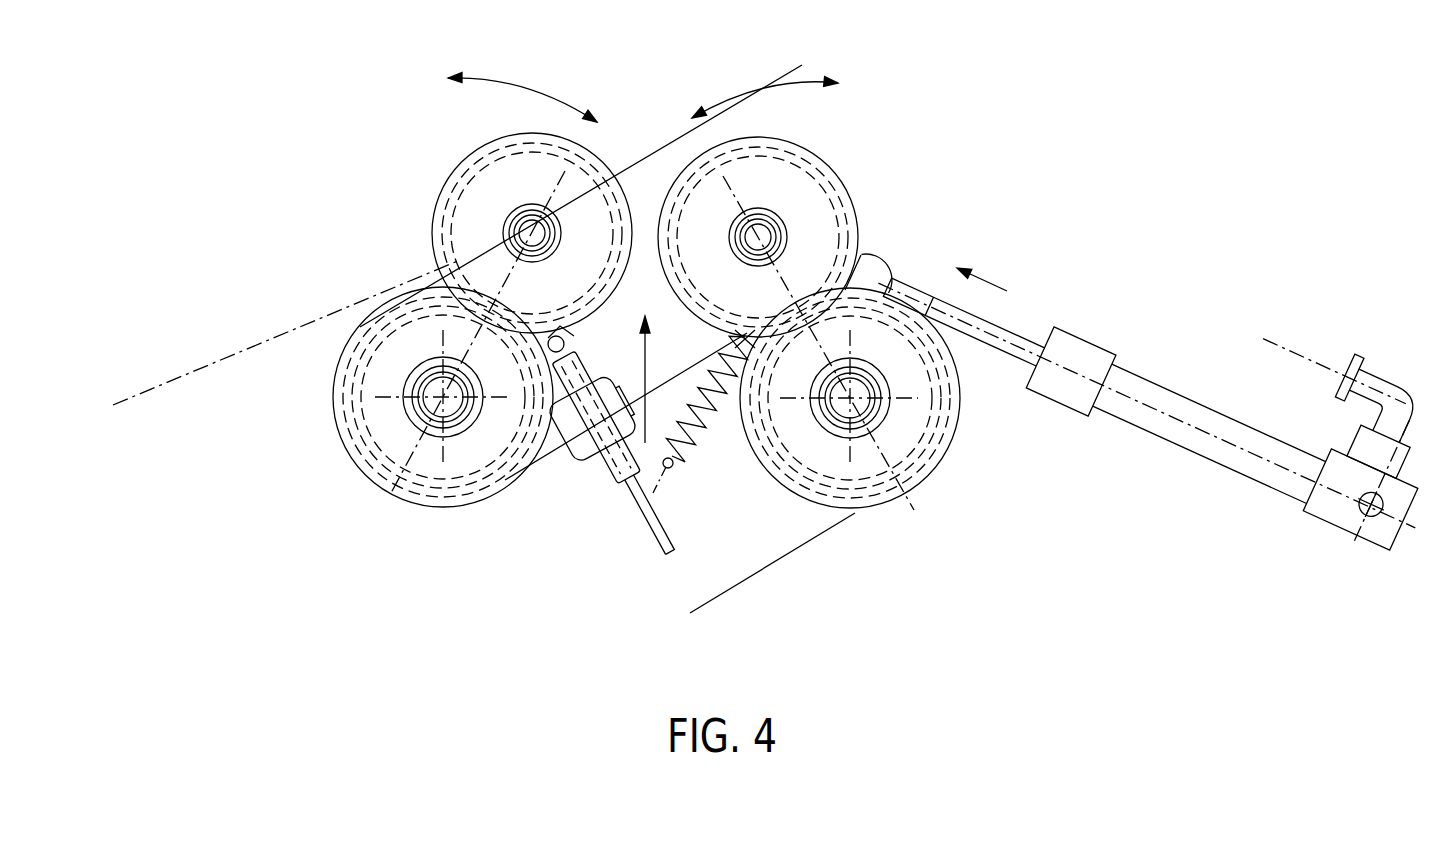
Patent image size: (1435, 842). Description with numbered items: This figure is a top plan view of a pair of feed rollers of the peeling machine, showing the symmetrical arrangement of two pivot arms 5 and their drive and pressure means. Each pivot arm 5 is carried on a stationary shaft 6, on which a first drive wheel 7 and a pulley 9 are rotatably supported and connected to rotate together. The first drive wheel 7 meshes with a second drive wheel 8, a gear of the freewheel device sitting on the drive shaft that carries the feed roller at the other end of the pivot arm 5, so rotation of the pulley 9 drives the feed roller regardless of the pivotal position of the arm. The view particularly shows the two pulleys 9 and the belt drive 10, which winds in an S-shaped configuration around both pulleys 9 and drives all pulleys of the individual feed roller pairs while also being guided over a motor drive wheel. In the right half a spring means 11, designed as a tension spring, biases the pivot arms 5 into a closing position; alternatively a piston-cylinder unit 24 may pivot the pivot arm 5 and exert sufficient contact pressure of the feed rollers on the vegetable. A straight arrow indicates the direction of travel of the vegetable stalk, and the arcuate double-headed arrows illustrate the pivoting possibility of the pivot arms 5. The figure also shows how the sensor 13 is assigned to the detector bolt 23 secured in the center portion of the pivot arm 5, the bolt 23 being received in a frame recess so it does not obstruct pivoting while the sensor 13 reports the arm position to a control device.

The pivot arm 5 is at (428, 255).
The second drive wheel 8 is at (813, 189).
The pulley 9 is at (452, 507).
The first drive wheel 7 is at (853, 513).
The stationary shaft 6 is at (428, 412).
The belt drive 10 is at (761, 88).
The spring means 11 is at (703, 470).
The sensor 13 is at (577, 465).
The detector bolt 23 is at (565, 347).
The piston-cylinder unit 24 is at (1105, 310).